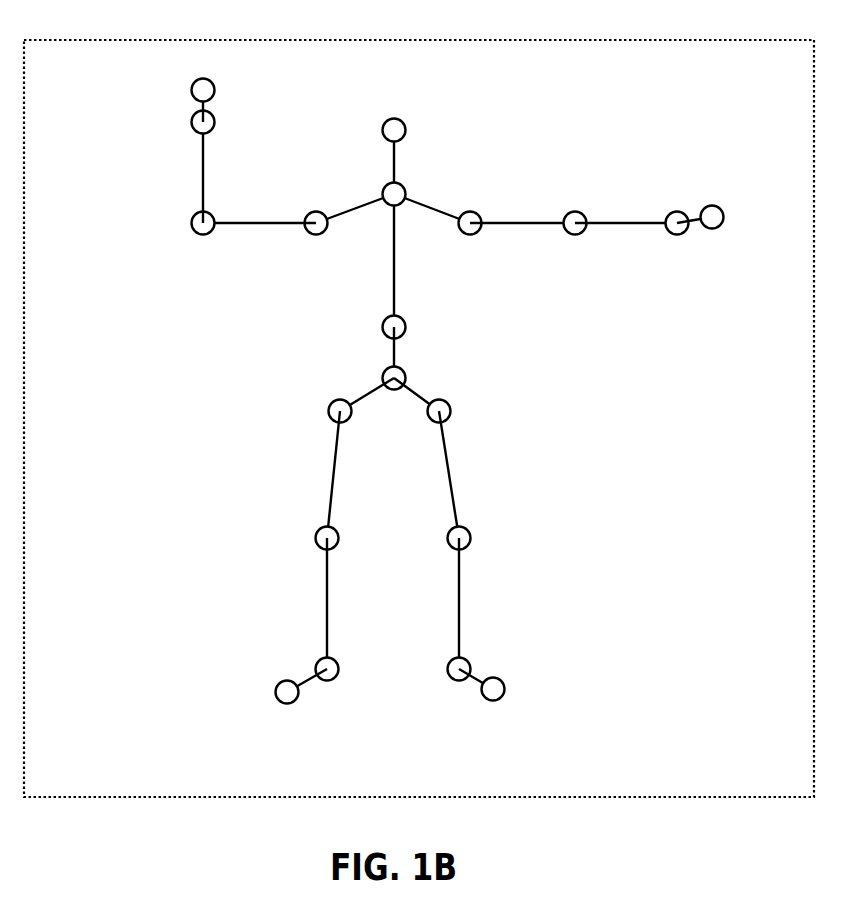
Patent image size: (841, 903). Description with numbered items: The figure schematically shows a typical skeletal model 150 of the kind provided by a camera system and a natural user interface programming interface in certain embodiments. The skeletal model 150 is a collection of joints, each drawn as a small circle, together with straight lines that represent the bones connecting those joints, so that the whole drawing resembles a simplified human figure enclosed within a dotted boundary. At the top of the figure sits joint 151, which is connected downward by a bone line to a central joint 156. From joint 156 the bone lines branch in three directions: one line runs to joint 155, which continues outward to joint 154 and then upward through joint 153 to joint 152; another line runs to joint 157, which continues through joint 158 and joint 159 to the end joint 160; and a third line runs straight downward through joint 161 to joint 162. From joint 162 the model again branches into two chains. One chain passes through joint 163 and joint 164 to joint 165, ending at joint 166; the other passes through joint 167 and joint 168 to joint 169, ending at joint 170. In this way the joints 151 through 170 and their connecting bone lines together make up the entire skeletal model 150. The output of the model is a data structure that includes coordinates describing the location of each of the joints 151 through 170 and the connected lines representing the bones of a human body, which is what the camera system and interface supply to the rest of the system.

The skeletal model 150 is at (419, 402).
The joint 151 is at (396, 144).
The joint 152 is at (181, 99).
The joint 153 is at (181, 166).
The joint 154 is at (232, 227).
The joint 155 is at (345, 228).
The joint 156 is at (412, 182).
The joint 157 is at (442, 229).
The joint 158 is at (532, 238).
The joint 159 is at (638, 238).
The joint 160 is at (720, 218).
The joint 161 is at (375, 267).
The joint 162 is at (374, 360).
The joint 163 is at (340, 402).
The joint 164 is at (306, 482).
The joint 165 is at (307, 609).
The joint 166 is at (277, 687).
The joint 167 is at (443, 402).
The joint 168 is at (477, 482).
The joint 169 is at (482, 609).
The joint 170 is at (505, 686).